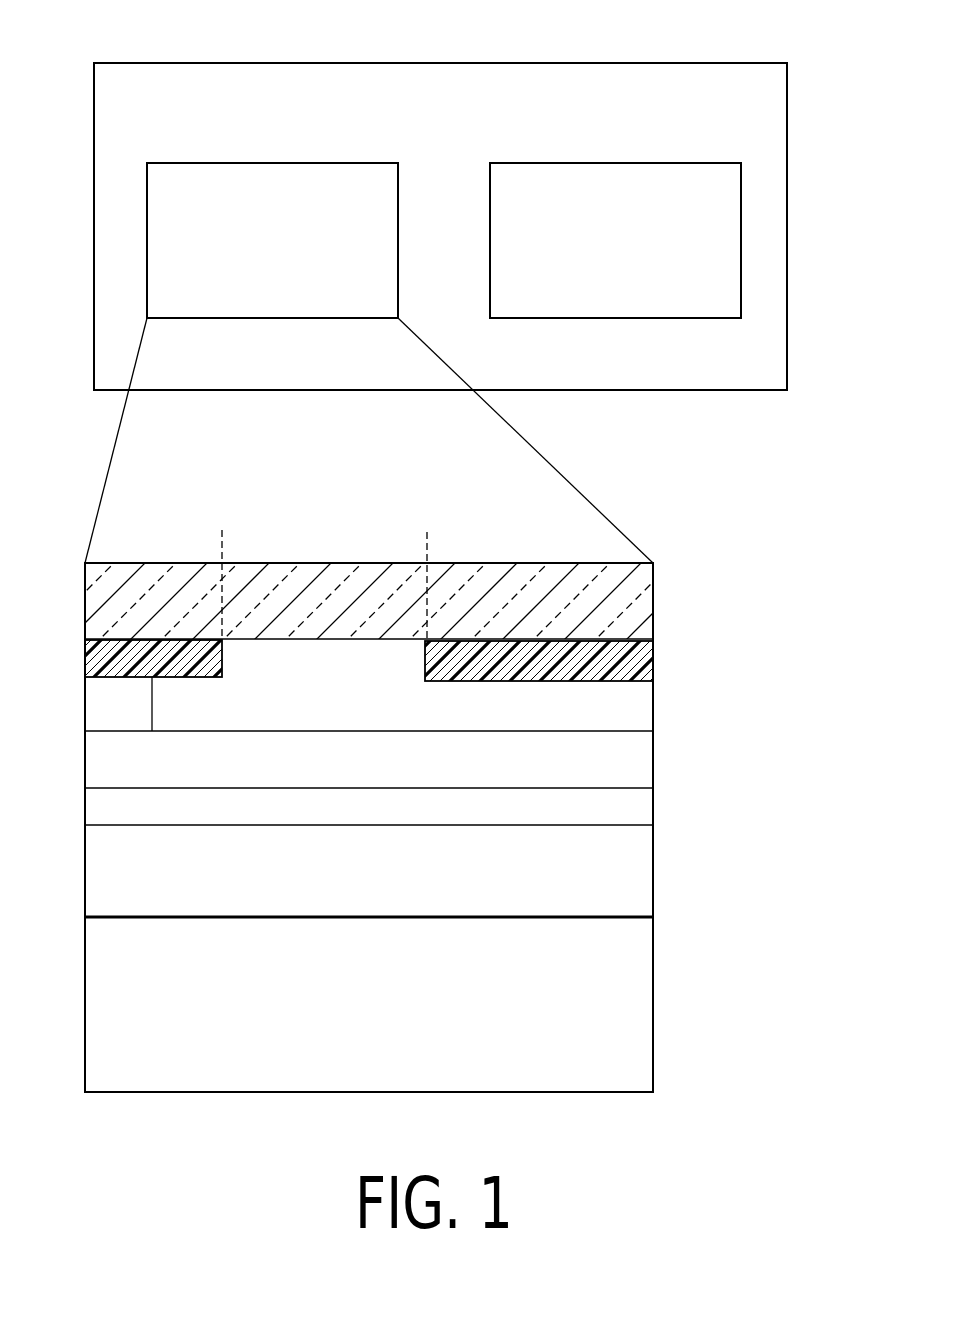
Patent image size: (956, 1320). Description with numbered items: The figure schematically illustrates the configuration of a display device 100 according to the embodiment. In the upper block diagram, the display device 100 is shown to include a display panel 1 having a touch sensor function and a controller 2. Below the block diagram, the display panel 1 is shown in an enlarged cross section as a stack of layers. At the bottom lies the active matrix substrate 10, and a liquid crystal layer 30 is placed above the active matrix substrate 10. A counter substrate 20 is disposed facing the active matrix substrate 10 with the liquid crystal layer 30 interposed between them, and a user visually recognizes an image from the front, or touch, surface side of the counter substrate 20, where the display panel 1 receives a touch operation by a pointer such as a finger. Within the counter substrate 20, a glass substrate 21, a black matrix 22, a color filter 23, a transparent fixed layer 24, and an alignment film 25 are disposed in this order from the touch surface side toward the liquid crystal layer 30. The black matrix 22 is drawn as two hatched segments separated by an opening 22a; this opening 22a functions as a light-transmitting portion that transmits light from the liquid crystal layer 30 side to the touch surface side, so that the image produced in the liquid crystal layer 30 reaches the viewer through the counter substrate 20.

The display device 100 is at (703, 63).
The display panel 1 is at (348, 163).
The controller 2 is at (690, 163).
The active matrix substrate 10 is at (625, 1015).
The counter substrate 20 is at (741, 598).
The glass substrate 21 is at (598, 623).
The black matrix 22 is at (653, 636).
The opening 22a is at (427, 532).
The color filter 23 is at (610, 707).
The transparent fixed layer 24 is at (610, 773).
The alignment film 25 is at (617, 812).
The liquid crystal layer 30 is at (625, 893).